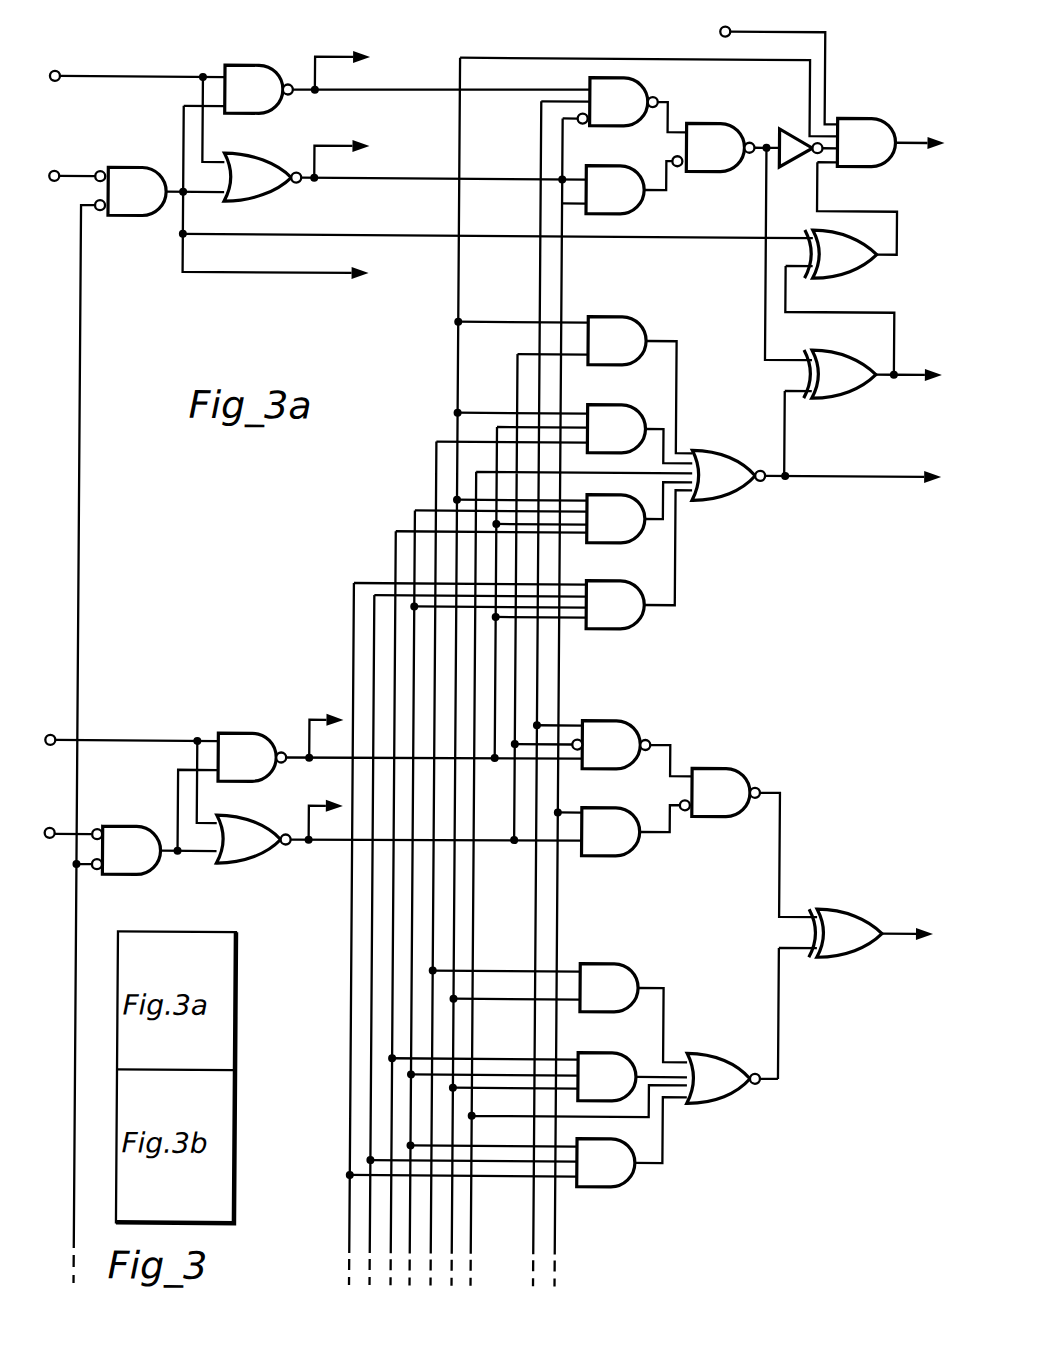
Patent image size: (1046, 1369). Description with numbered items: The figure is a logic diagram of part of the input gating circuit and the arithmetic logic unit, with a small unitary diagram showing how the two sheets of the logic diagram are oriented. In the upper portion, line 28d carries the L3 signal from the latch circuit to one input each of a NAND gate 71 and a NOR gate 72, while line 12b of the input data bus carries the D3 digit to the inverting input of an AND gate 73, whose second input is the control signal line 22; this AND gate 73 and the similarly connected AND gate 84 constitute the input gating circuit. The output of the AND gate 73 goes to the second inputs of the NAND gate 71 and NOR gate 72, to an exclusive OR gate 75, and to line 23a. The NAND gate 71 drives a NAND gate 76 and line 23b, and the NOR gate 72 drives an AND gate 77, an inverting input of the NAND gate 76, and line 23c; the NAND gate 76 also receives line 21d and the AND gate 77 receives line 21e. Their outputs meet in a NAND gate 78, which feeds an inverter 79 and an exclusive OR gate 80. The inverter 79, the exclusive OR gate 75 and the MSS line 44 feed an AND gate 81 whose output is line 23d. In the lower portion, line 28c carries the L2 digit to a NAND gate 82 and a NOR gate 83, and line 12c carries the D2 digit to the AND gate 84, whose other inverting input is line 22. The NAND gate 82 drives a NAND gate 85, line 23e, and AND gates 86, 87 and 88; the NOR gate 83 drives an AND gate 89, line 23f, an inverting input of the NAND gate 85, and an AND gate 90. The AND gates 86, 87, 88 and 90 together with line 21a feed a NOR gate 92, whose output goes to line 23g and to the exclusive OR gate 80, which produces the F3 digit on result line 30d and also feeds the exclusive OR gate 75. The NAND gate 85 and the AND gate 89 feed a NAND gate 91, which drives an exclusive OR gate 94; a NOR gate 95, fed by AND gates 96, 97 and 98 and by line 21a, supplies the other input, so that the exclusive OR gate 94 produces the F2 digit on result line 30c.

The line of the input data bus 12b is at (71, 181).
The line of the input data bus 12c is at (64, 838).
The line of the bus 21 21a is at (600, 472).
The line of bus 21 21d is at (534, 1214).
The line of the bus 21 21e is at (565, 292).
The control signal line 22 is at (80, 365).
The line of the bus 23 23a is at (257, 273).
The line of the bus 23 23b is at (328, 58).
The line of the bus 23 23c is at (328, 147).
The line of the bus 23 23d is at (917, 145).
The line of the bus 23 23e is at (309, 727).
The line of the bus 23 23f is at (311, 812).
The line of the bus 23 23g is at (845, 474).
The line 28c is at (70, 745).
The line 28d is at (69, 80).
The line of the result bus 30c is at (899, 934).
The line of the result bus 30d is at (916, 374).
The line 44 is at (736, 26).
The NAND gate 71 is at (241, 104).
The NOR gate 72 is at (243, 192).
The AND gate 73 is at (125, 207).
The exclusive OR gate 75 is at (836, 265).
The NAND gate 76 is at (606, 114).
The AND gate 77 is at (603, 202).
The NAND gate 78 is at (703, 159).
The inverter 79 is at (797, 128).
The exclusive OR gate 80 is at (836, 385).
The AND gate 81 is at (854, 153).
The NAND gate 82 is at (239, 772).
The NOR gate 83 is at (241, 854).
The AND gate 84 is at (124, 866).
The NAND gate 85 is at (603, 757).
The AND gate 86 is at (606, 617).
The AND gate 87 is at (606, 531).
The AND gate 88 is at (606, 441).
The AND gate 89 is at (603, 844).
The AND gate 90 is at (606, 353).
The NAND gate 91 is at (713, 804).
The NOR gate 92 is at (713, 487).
The exclusive OR gate 94 is at (845, 944).
The NOR gate 95 is at (712, 1090).
The AND gate 96 is at (602, 1000).
The AND gate 97 is at (601, 1089).
The AND gate 98 is at (600, 1175).